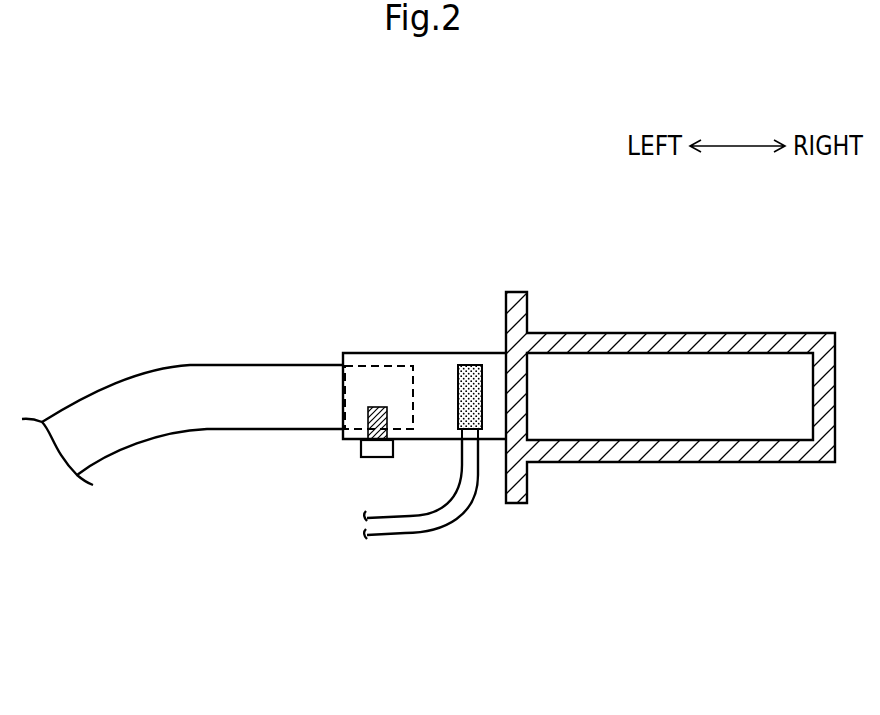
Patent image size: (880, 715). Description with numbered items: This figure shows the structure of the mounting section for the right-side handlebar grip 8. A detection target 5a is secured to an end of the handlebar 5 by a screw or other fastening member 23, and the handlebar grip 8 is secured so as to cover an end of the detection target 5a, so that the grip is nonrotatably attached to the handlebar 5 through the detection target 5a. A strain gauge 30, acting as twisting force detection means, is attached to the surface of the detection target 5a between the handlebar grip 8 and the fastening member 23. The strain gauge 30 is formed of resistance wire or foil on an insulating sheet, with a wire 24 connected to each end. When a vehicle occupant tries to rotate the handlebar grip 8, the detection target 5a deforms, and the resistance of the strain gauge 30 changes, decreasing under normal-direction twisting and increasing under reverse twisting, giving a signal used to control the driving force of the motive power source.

The handlebar 5 is at (252, 380).
The detection target 5a is at (576, 372).
The handlebar grip 8 is at (655, 338).
The fastening member 23 is at (376, 457).
The wire 24 is at (432, 508).
The strain gauge 30 is at (468, 370).